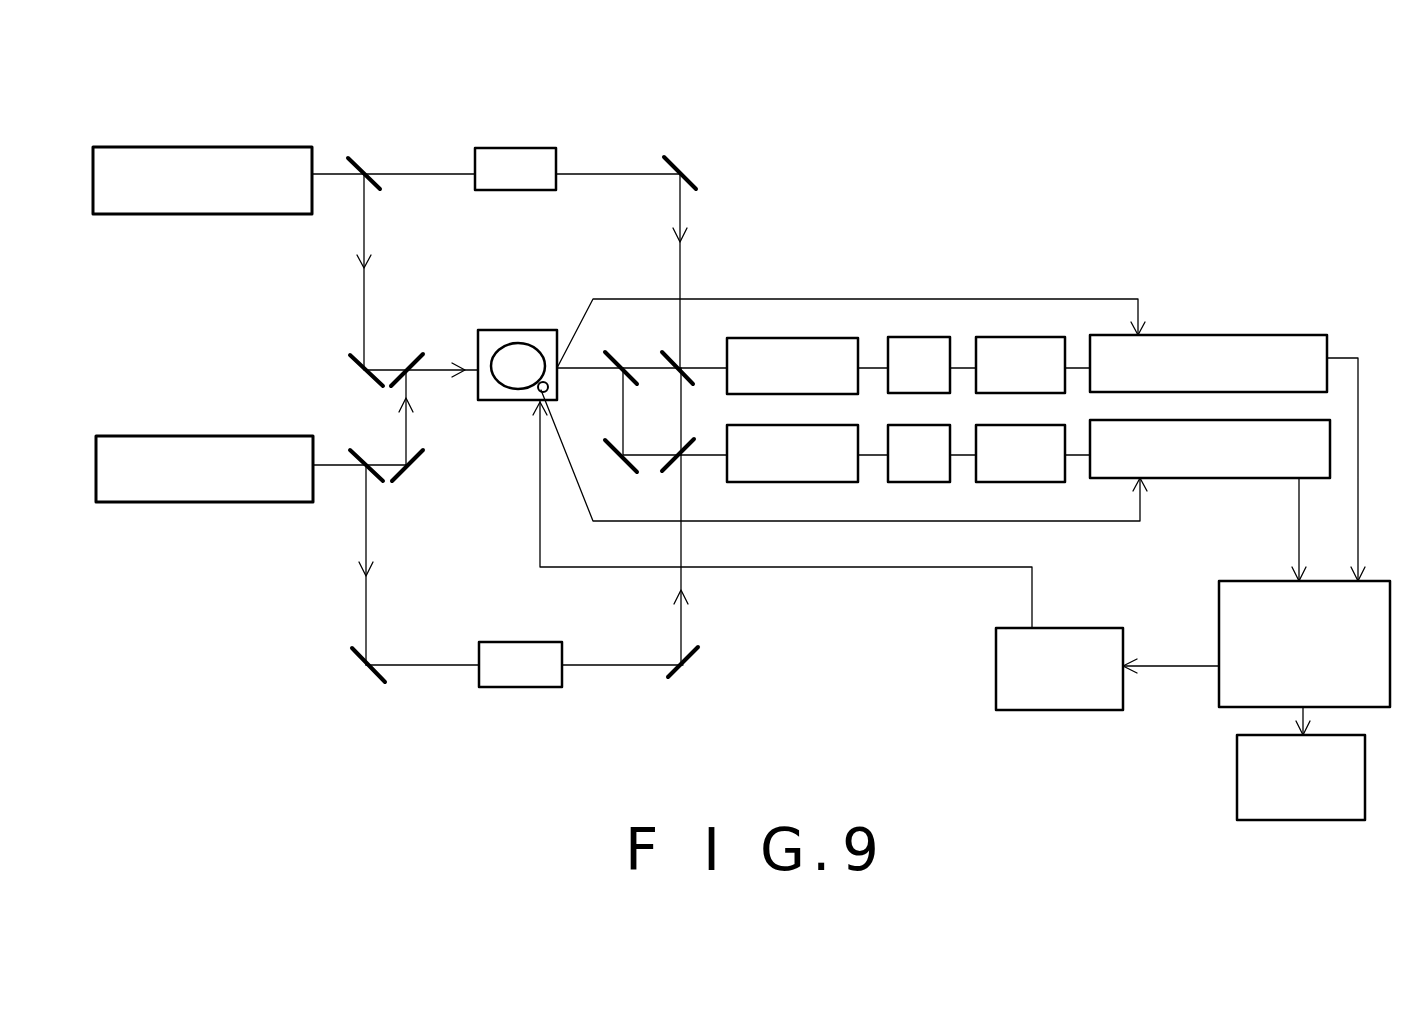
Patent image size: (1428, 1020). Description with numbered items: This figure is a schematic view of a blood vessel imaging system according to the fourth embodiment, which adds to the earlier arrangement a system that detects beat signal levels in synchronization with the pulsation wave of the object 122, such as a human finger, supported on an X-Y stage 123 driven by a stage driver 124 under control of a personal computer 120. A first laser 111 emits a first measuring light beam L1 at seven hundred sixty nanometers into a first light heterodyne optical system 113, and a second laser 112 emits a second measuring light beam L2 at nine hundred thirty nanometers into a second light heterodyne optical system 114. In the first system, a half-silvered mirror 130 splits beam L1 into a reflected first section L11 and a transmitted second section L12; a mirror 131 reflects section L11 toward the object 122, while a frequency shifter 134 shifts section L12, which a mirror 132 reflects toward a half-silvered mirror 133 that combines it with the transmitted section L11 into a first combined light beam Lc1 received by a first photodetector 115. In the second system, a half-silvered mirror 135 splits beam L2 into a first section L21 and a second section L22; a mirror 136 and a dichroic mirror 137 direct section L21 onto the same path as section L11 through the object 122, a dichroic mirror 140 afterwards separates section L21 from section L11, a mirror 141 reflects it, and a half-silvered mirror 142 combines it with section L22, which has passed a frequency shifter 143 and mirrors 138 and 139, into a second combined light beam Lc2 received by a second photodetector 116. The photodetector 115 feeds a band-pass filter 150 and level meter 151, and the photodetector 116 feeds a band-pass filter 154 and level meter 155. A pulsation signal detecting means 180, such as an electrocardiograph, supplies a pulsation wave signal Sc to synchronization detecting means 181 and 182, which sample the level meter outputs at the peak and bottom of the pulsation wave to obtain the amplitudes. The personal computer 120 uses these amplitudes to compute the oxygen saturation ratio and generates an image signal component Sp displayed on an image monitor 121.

The first laser 111 is at (215, 147).
The second laser 112 is at (210, 436).
The first light heterodyne optical system 113 is at (330, 270).
The second light heterodyne optical system 114 is at (330, 582).
The first photodetector 115 is at (778, 338).
The second photodetector 116 is at (800, 483).
The personal computer 120 is at (1232, 710).
The image monitor 121 is at (1237, 816).
The object 122 is at (517, 345).
The X-Y stage 123 is at (512, 398).
The stage driver 124 is at (1010, 712).
The half-silvered mirror 130 is at (360, 150).
The mirror 131 is at (350, 362).
The mirror 132 is at (674, 152).
The half-silvered mirror 133 is at (670, 352).
The frequency shifter 134 is at (520, 148).
The half-silvered mirror 135 is at (357, 450).
The mirror 136 is at (403, 473).
The dichroic mirror 137 is at (414, 352).
The mirror 138 is at (354, 662).
The mirror 139 is at (668, 680).
The dichroic mirror 140 is at (666, 403).
The mirror 141 is at (608, 452).
The half-silvered mirror 142 is at (670, 463).
The frequency shifter 143 is at (515, 690).
The band-pass filter 150 is at (936, 337).
The level meter 151 is at (1038, 337).
The band-pass filter 154 is at (940, 483).
The level meter 155 is at (1045, 483).
The pulsation signal detecting means 180 is at (550, 387).
The synchronization detecting means 181 is at (1194, 334).
The synchronization detecting means 182 is at (1208, 480).
The first measuring light beam L1 is at (327, 170).
The first section of the first measuring light beam L11 is at (367, 233).
The second section of the first measuring light beam L12 is at (430, 170).
The second measuring light beam L2 is at (333, 468).
The first section of the second measuring light beam L21 is at (408, 430).
The second section of the second measuring light beam L22 is at (370, 612).
The first combined light beam Lc1 is at (708, 340).
The second combined light beam Lc2 is at (702, 525).
The pulsation wave signal Sc is at (975, 296).
The image signal component Sp is at (1306, 714).